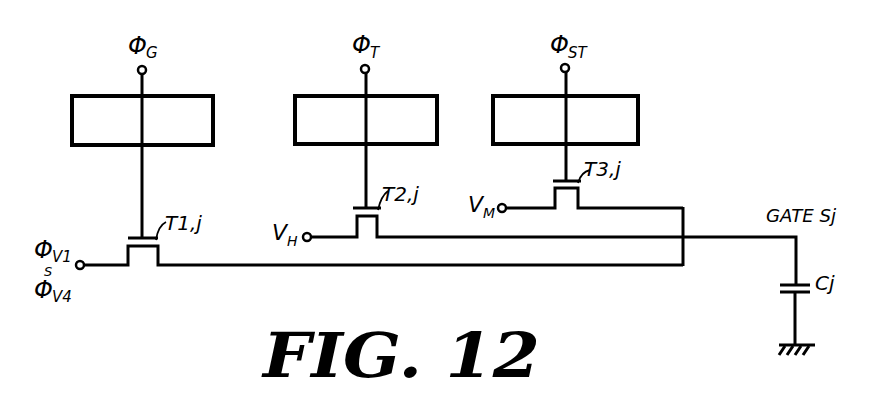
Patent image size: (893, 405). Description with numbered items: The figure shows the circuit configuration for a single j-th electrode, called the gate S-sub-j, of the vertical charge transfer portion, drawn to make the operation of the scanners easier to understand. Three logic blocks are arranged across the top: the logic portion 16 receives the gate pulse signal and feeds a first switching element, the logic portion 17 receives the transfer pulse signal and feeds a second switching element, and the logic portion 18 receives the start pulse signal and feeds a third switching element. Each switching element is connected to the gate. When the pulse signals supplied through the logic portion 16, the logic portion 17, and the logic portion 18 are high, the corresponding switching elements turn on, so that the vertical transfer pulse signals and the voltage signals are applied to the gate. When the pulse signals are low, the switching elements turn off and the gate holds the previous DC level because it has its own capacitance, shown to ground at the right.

The logic portion 16 is at (198, 96).
The logic portion 17 is at (415, 96).
The logic portion 18 is at (616, 96).